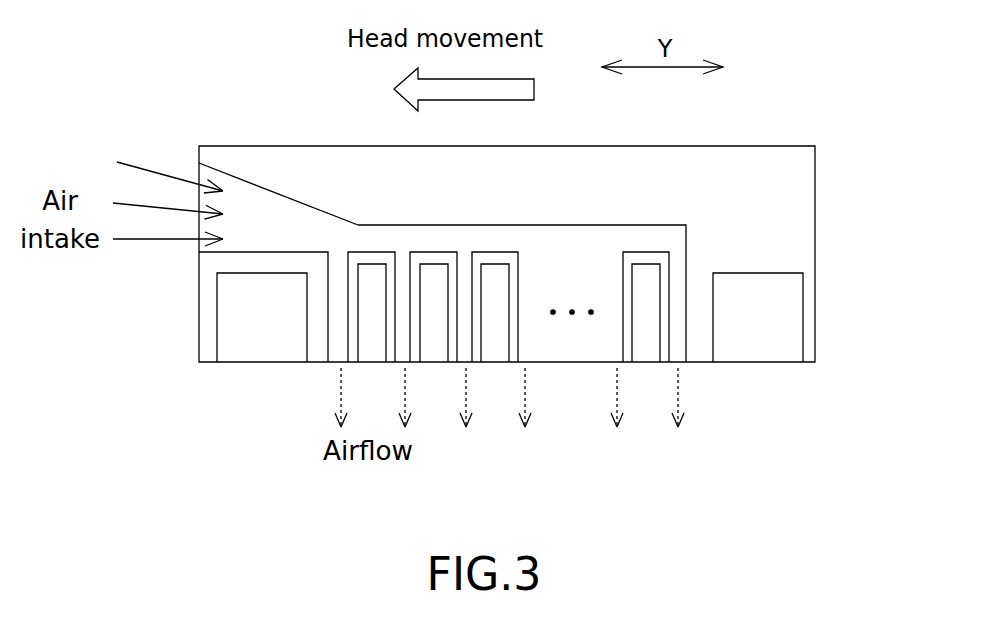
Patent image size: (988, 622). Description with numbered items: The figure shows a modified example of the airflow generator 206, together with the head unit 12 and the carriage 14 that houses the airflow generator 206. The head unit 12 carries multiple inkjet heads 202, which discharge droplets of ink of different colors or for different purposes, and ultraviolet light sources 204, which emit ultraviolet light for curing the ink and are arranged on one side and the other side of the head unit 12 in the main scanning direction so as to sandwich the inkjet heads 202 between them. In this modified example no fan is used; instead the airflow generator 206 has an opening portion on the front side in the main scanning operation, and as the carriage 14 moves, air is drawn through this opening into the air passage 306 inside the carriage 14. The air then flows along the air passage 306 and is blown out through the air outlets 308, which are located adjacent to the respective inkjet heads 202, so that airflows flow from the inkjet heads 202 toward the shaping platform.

The head unit 12 is at (850, 318).
The carriage 14 is at (788, 180).
The inkjet heads 202 is at (373, 272).
The ultraviolet light sources 204 is at (241, 353).
The airflow generator 206 is at (253, 207).
The air passage 306 is at (325, 228).
The air outlets 308 is at (338, 364).